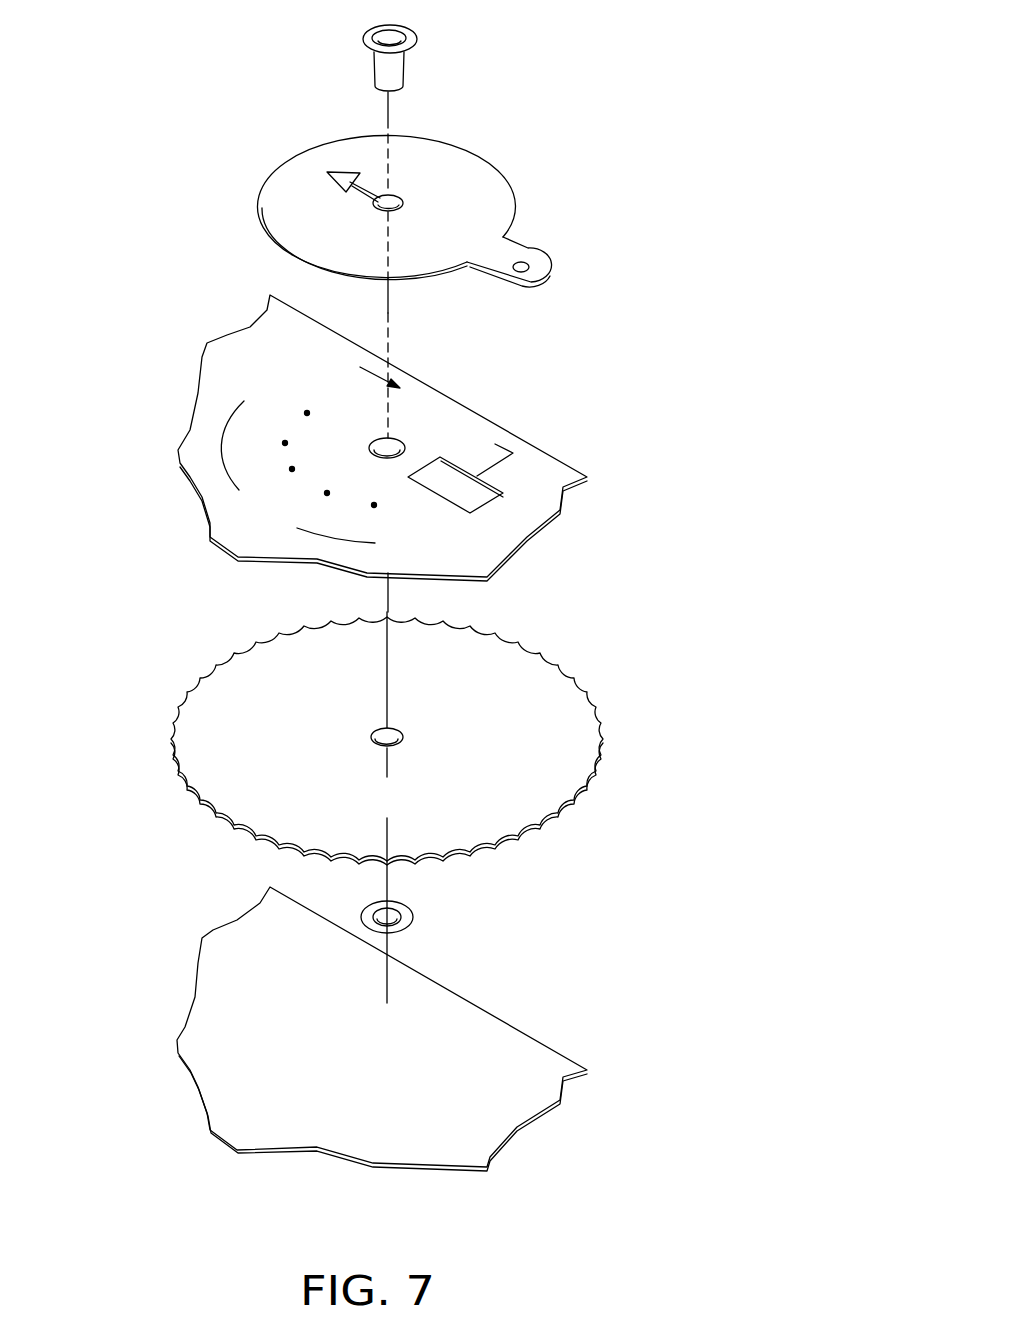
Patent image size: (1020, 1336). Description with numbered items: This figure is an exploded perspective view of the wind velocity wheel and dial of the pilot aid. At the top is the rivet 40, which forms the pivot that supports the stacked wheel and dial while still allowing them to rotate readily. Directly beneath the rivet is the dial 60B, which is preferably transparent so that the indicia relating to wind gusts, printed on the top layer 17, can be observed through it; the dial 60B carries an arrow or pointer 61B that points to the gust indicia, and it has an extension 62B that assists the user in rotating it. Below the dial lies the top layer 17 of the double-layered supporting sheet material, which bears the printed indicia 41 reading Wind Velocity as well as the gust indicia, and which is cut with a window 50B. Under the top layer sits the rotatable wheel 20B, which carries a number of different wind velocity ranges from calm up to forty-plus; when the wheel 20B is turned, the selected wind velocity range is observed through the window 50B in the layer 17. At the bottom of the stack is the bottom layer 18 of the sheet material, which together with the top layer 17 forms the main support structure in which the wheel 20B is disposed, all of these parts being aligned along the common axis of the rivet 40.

The rivet 40 is at (410, 36).
The dial 60B is at (453, 160).
The arrow or pointer 61B is at (340, 168).
The extension 62B is at (522, 262).
The indicia 41 is at (447, 393).
The top layer 17 is at (547, 460).
The window 50B is at (470, 497).
The wheel 20B is at (213, 718).
The bottom layer 18 is at (473, 1047).